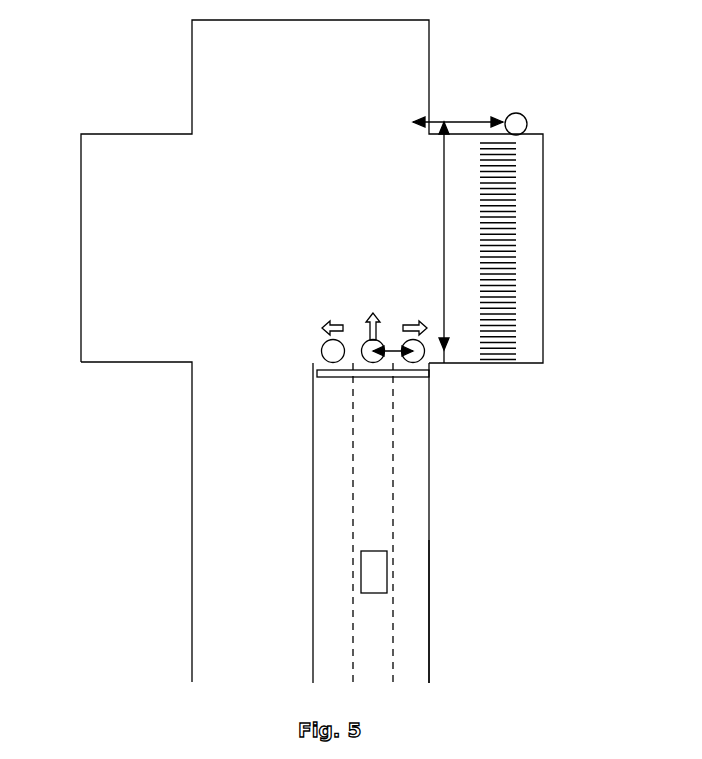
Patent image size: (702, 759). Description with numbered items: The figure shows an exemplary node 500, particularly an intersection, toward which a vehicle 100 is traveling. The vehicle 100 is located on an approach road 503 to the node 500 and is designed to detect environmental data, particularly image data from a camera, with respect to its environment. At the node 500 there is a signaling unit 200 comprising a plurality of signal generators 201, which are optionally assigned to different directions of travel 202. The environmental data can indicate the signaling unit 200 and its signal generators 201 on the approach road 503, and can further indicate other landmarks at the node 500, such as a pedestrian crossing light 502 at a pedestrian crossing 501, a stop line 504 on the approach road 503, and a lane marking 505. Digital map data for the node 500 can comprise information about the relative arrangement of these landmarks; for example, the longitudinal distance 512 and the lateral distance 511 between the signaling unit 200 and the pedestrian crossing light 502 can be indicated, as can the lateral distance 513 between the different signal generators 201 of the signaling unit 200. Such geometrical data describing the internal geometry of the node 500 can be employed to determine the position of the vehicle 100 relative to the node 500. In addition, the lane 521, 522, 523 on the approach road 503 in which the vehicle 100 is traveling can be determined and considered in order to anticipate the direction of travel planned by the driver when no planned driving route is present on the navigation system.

The node 500 is at (116, 76).
The pedestrian crossing 501 is at (515, 195).
The pedestrian crossing light 502 is at (528, 118).
The approach road 503 is at (432, 428).
The stop line 504 is at (317, 373).
The lane marking 505 is at (432, 537).
The lateral distance 511 is at (443, 227).
The longitudinal distance 512 is at (450, 119).
The lateral distance between signal generators 513 is at (396, 340).
The signaling unit 200 is at (312, 351).
The signal generators 201 is at (428, 360).
The directions of travel 202 is at (325, 318).
The lane 521 is at (416, 472).
The lane 522 is at (365, 447).
The lane 523 is at (327, 493).
The vehicle 100 is at (383, 573).